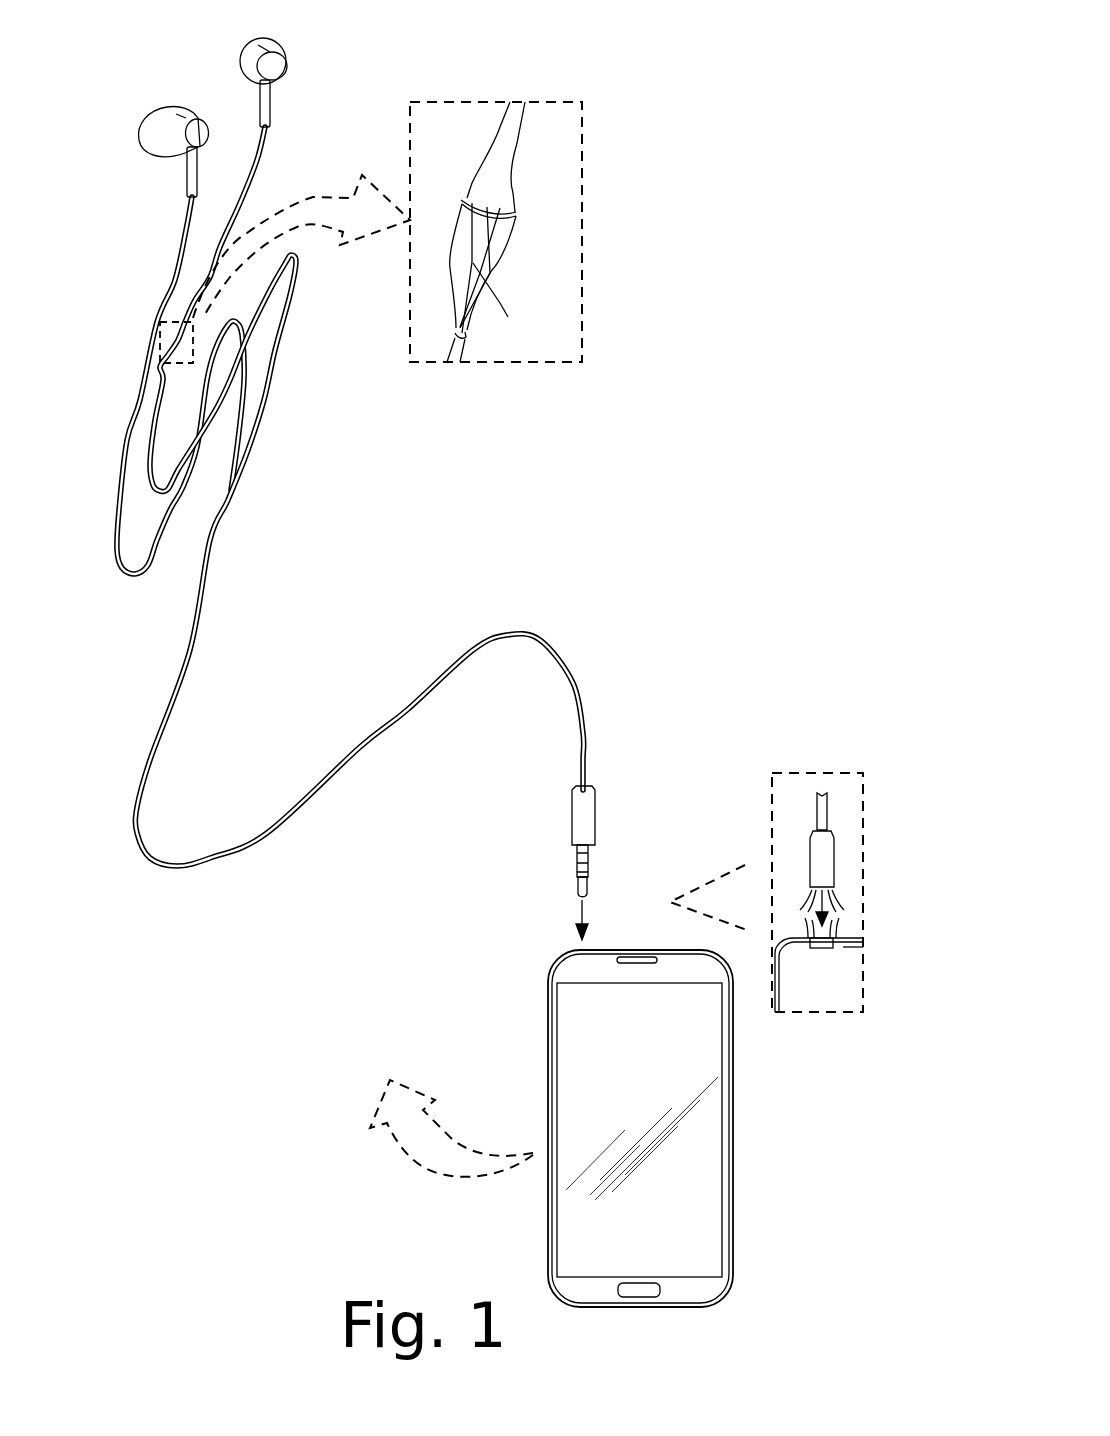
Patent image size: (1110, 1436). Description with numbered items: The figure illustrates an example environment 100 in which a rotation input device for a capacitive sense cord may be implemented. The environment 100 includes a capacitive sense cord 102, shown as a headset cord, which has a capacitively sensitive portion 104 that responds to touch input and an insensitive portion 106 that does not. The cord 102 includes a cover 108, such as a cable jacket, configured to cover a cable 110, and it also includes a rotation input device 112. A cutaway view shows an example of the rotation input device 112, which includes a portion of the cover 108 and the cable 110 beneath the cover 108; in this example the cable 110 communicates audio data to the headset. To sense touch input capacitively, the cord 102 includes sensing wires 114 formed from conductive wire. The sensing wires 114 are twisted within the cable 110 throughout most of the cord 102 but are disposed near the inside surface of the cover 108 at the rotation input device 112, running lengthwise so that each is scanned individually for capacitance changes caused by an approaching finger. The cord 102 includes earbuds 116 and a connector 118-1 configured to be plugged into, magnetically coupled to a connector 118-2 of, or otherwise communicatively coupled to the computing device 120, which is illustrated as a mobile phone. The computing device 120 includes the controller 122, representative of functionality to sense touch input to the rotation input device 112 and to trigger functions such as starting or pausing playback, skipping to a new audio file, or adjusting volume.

The environment 100 is at (721, 58).
The capacitive sense cord 102 is at (303, 615).
The capacitively sensitive portion 104 is at (162, 352).
The insensitive portion 106 is at (162, 703).
The cover 108 is at (507, 143).
The cable 110 is at (460, 350).
The rotation input device 112 is at (635, 229).
The sensing wires 114 is at (500, 303).
The earbuds 116 is at (162, 108).
The connector 118-1 is at (589, 866).
The connector 118-2 is at (788, 772).
The computing device 120 is at (433, 1096).
The controller 122 is at (307, 999).